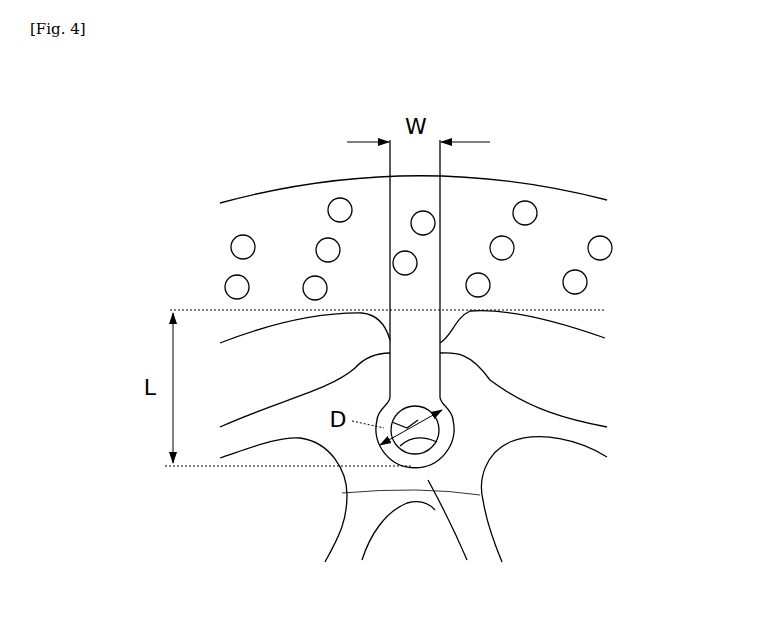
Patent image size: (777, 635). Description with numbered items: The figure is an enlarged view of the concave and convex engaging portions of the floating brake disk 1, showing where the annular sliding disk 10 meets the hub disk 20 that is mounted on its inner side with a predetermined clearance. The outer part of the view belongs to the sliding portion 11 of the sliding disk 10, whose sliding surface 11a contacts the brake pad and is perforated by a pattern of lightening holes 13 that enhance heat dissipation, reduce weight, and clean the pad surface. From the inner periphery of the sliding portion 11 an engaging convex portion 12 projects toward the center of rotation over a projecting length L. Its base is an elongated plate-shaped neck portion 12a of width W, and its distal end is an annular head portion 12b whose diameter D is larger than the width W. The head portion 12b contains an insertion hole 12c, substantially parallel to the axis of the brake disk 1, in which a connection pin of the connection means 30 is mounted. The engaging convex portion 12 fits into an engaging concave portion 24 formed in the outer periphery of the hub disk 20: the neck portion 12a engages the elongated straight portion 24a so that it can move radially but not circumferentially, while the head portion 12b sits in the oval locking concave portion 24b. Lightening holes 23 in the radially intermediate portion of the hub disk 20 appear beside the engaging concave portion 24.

The floating brake disk 1 is at (568, 158).
The sliding disk 10 is at (512, 181).
The sliding portion 11 is at (333, 195).
The sliding surface 11a is at (266, 208).
The engaging convex portion 12 is at (417, 358).
The neck portion 12a is at (440, 372).
The head portion 12b is at (450, 449).
The insertion hole 12c is at (420, 478).
The lightening holes 13 is at (470, 288).
The hub disk 20 is at (592, 413).
The lightening holes 23 is at (537, 509).
The engaging concave portion 24 is at (455, 441).
The straight portion 24a is at (442, 343).
The locking concave portion 24b is at (450, 480).
The connection means 30 is at (446, 469).